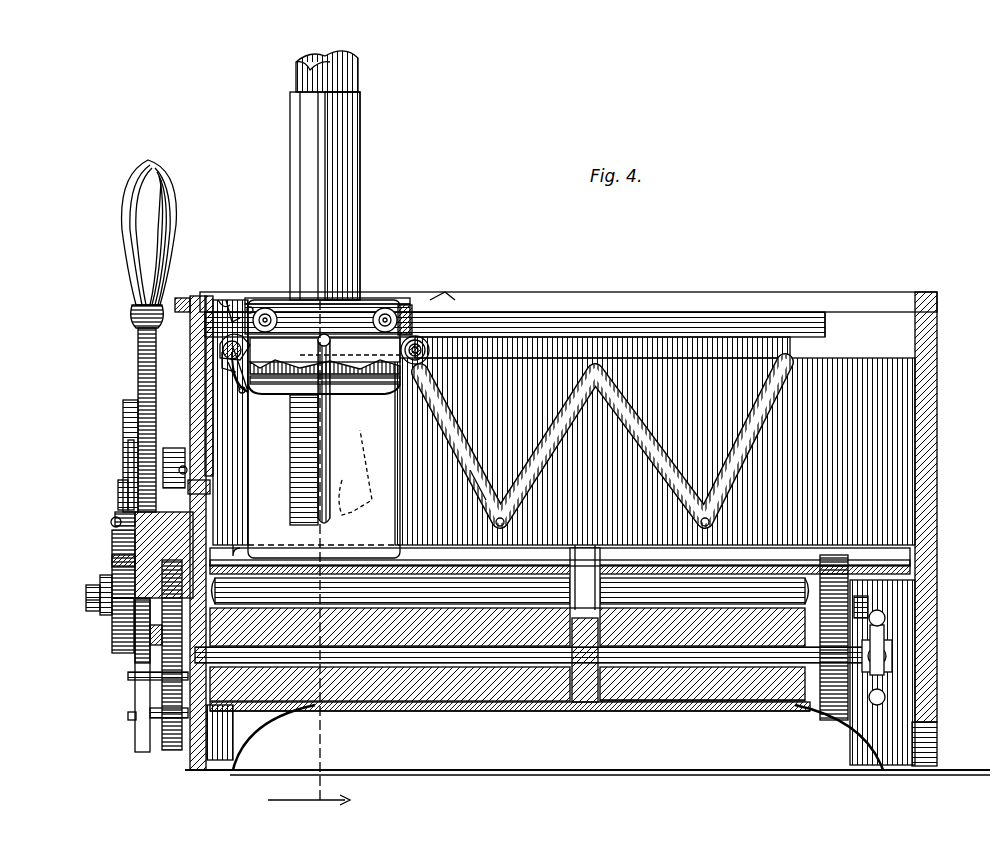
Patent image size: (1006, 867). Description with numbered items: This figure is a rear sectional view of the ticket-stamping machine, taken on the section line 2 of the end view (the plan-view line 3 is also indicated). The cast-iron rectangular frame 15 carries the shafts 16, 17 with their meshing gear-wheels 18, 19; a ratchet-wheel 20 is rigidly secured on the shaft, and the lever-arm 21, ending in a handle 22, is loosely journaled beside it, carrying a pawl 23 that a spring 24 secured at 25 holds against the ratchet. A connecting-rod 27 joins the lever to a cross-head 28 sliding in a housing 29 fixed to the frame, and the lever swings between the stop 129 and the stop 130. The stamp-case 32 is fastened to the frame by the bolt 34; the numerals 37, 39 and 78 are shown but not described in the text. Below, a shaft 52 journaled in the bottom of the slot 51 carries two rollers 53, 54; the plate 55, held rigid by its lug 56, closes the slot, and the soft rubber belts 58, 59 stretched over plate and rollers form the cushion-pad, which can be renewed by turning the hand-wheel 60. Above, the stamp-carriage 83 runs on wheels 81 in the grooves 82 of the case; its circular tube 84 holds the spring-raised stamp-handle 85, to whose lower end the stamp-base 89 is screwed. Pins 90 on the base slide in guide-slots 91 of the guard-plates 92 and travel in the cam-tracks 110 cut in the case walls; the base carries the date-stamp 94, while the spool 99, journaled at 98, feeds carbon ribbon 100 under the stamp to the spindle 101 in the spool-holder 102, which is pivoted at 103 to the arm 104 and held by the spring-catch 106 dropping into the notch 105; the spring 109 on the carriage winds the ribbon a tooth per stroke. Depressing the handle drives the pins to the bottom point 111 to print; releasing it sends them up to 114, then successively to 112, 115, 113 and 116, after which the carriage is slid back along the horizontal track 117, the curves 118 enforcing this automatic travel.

The section line 2 is at (309, 813).
The section line 3 is at (590, 702).
The rectangular frame 15 is at (930, 555).
The shaft 16 is at (86, 593).
The shaft 17 is at (150, 615).
The gear-wheel 18 is at (162, 740).
The gear-wheel 19 is at (162, 638).
The ratchet-wheel 20 is at (112, 548).
The lever-arm 21 is at (138, 376).
The handle 22 is at (140, 232).
The pawl 23 is at (125, 520).
The spring 24 is at (125, 488).
The spring attachment 25 is at (125, 420).
The connecting-rod 27 is at (120, 560).
The cross-head 28 is at (138, 588).
The housing 29 is at (95, 608).
The stamp-case 32 is at (196, 300).
The bolt 34 is at (190, 297).
The pin 37 is at (180, 466).
The gear 39 is at (830, 712).
The slot 51 is at (270, 620).
The shaft 52 is at (283, 700).
The roller 53 is at (338, 702).
The roller 54 is at (678, 702).
The plate 55 is at (790, 565).
The lug 56 is at (470, 580).
The belt 58 is at (272, 565).
The belt 59 is at (750, 710).
The hand-wheel 60 is at (885, 618).
The rod 78 is at (140, 480).
The wheels 81 is at (266, 305).
The grooves 82 is at (487, 318).
The stamp-carriage 83 is at (312, 310).
The circular tube 84 is at (300, 175).
The stamp-handle 85 is at (300, 69).
The stamp-base 89 is at (355, 372).
The pins 90 is at (376, 300).
The guide-slots 91 is at (318, 420).
The guard-plates 92 is at (325, 427).
The date-stamp 94 is at (362, 392).
The journal 98 is at (422, 336).
The spool 99 is at (428, 360).
The carbon ribbon 100 is at (222, 366).
The spindle 101 is at (224, 350).
The spool-holder 102 is at (218, 342).
The pivot 103 is at (245, 400).
The arm 104 is at (236, 385).
The notch 105 is at (222, 300).
The spring-catch 106 is at (250, 310).
The spring 109 is at (227, 310).
The cam-tracks 110 is at (466, 438).
The bottom point 111 is at (343, 507).
The bottom point 112 is at (510, 518).
The bottom point 113 is at (714, 520).
The upper position 114 is at (445, 300).
The upper position 115 is at (600, 365).
The upper position 116 is at (790, 345).
The horizontal track 117 is at (520, 345).
The curves 118 is at (478, 488).
The stop 129 is at (135, 720).
The stop 130 is at (135, 680).